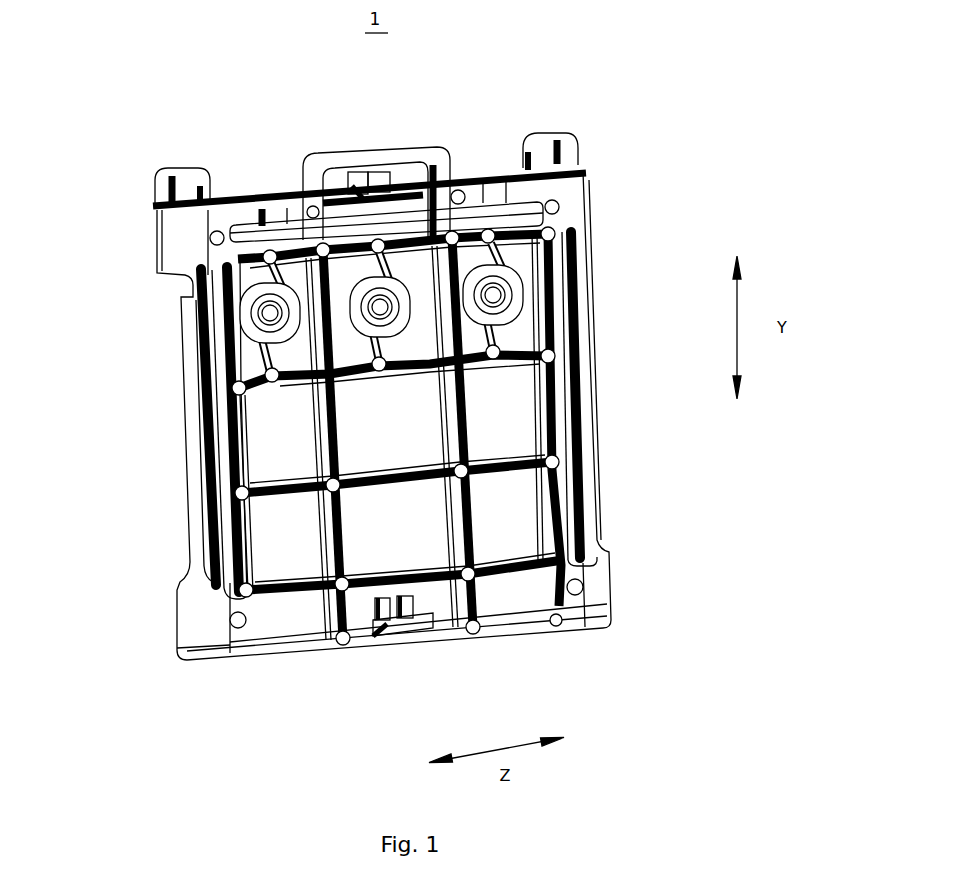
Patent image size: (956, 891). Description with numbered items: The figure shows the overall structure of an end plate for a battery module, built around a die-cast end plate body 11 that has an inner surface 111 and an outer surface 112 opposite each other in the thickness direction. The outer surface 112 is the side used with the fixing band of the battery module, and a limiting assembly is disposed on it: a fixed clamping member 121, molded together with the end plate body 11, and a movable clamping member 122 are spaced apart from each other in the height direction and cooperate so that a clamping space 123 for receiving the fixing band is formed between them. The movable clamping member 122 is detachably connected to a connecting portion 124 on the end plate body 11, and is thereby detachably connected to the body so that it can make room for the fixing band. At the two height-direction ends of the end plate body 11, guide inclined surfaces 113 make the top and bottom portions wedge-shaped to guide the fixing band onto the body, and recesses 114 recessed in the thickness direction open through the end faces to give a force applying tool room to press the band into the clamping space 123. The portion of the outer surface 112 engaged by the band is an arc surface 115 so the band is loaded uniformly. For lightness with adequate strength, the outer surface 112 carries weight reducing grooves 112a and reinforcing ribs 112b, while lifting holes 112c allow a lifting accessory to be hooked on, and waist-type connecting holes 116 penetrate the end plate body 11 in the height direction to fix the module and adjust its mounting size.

The end plate body 11 is at (463, 178).
The inner surface 111 is at (168, 410).
The outer surface 112 is at (560, 500).
The weight reducing groove 112a is at (520, 408).
The reinforcing rib 112b is at (455, 399).
The lifting hole 112c is at (270, 317).
The guide inclined surface 113 is at (200, 660).
The recess 114 is at (273, 213).
The arc surface 115 is at (602, 581).
The connecting hole 116 is at (197, 203).
The fixed clamping member 121 is at (556, 289).
The movable clamping member 122 is at (405, 185).
The clamping space 123 is at (360, 635).
The connecting portion 124 is at (357, 181).